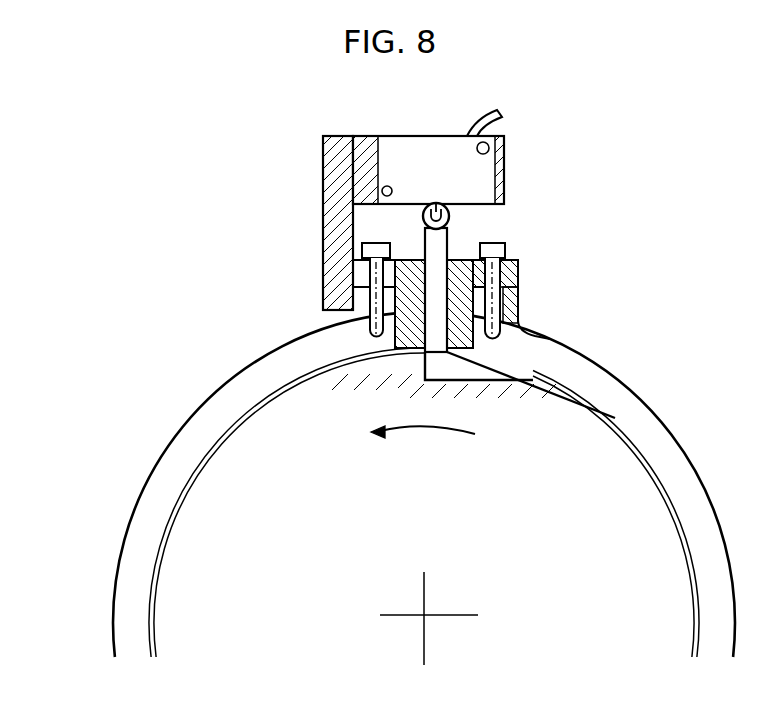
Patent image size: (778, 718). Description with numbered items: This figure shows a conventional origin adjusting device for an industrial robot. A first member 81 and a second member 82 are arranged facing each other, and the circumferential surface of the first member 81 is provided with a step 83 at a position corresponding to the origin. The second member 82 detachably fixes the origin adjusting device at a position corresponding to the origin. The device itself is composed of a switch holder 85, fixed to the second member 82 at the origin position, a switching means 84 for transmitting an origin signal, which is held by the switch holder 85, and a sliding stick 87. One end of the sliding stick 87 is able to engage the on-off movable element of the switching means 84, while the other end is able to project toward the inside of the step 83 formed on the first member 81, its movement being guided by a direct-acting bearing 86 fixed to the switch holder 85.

The first member 81 is at (272, 467).
The second member 82 is at (152, 467).
The step 83 is at (480, 380).
The switching means 84 is at (397, 163).
The switch holder 85 is at (323, 238).
The direct-acting bearing 86 is at (518, 272).
The sliding stick 87 is at (447, 243).